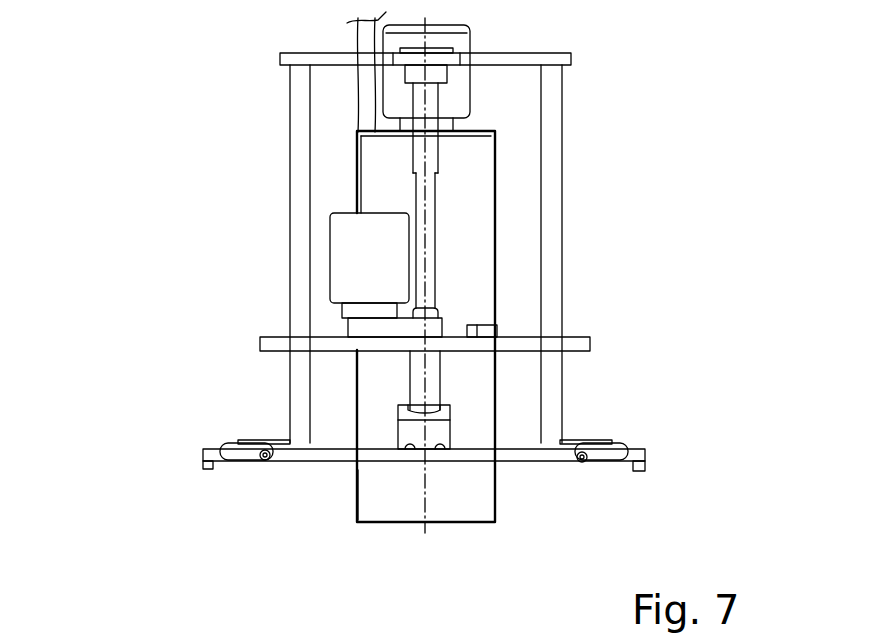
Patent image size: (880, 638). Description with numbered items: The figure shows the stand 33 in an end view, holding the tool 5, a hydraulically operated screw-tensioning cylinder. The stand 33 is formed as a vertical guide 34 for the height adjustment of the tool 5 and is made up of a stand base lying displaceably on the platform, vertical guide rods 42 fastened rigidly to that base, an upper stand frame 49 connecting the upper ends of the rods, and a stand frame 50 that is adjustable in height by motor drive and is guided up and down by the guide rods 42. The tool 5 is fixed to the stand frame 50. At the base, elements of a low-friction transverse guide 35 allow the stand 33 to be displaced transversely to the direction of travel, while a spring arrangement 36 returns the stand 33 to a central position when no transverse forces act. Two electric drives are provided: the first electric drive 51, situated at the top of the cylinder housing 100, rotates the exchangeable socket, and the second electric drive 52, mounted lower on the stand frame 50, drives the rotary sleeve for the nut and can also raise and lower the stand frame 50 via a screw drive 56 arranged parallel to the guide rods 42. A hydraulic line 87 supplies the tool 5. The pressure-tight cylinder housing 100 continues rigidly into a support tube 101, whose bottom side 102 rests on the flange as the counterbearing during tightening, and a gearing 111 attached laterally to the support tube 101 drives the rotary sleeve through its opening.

The tool 5 is at (497, 177).
The stand 33 is at (357, 254).
The vertical guide 34 is at (287, 328).
The transverse guide 35 is at (270, 442).
The spring arrangement 36 is at (228, 447).
The vertical guide rods 42 is at (300, 105).
The upper stand frame 49 is at (571, 62).
The stand frame 50 is at (590, 345).
The first electric drive 51 is at (457, 85).
The second electric drive 52 is at (338, 252).
The screw drive 56 is at (417, 163).
The hydraulic line 87 is at (355, 88).
The cylinder housing 100 is at (485, 223).
The support tube 101 is at (375, 492).
The bottom side 102 is at (378, 522).
The gearing 111 is at (442, 433).